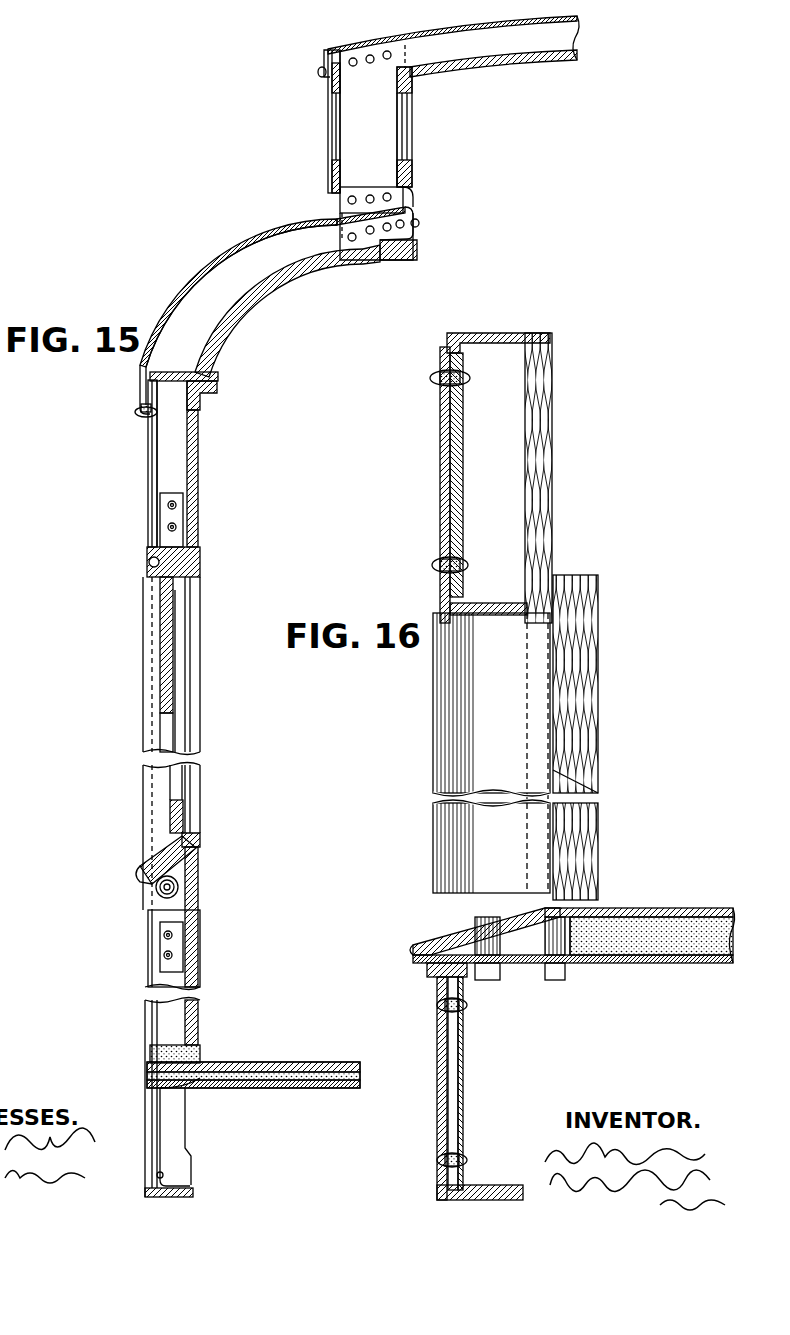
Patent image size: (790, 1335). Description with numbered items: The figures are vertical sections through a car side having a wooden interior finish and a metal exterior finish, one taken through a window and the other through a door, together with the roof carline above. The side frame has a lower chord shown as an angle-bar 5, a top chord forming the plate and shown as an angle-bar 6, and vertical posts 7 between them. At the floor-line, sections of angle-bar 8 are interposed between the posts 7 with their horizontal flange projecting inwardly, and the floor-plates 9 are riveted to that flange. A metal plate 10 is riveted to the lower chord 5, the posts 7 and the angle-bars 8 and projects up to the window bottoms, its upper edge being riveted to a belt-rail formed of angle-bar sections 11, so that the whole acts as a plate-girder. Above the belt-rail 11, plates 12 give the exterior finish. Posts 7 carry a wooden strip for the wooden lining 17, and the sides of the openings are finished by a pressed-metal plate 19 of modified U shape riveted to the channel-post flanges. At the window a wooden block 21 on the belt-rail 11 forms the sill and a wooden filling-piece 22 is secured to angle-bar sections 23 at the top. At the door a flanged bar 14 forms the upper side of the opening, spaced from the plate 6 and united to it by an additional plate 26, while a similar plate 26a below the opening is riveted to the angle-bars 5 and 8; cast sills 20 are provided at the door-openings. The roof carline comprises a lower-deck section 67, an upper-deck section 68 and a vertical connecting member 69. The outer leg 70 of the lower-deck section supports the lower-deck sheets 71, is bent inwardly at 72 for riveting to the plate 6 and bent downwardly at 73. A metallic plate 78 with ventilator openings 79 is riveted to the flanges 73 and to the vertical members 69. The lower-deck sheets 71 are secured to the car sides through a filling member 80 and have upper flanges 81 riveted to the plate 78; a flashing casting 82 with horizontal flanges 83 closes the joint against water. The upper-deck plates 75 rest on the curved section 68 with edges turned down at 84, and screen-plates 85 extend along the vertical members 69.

In FIG. 15, the angle-bar (lower chord) 5 is at (195, 1195).
In FIG. 16, the angle-bar (lower chord) 5 is at (470, 1190).
In FIG. 15, the angle-bar (top chord or plate) 6 is at (157, 373).
In FIG. 16, the angle-bar (top chord or plate) 6 is at (466, 333).
In FIG. 15, the posts 7 is at (178, 435).
In FIG. 15, the angle-bar sections 8 is at (162, 1090).
In FIG. 16, the angle-bar sections 8 is at (470, 982).
In FIG. 15, the floor-plates 9 is at (290, 1082).
In FIG. 16, the floor-plates 9 is at (670, 964).
In FIG. 15, the metal plate 10 is at (152, 970).
In FIG. 16, the metal plate 10 is at (437, 1095).
In FIG. 15, the belt-rail (angle-bar sections) 11 is at (160, 907).
In FIG. 15, the plates 12 is at (150, 465).
In FIG. 16, the plates 12 is at (440, 461).
In FIG. 16, the flanged bar 14 is at (477, 603).
In FIG. 15, the wooden lining 17 is at (198, 475).
In FIG. 16, the wooden lining 17 is at (545, 525).
In FIG. 16, the pressed-metal plate 19 is at (450, 700).
In FIG. 16, the sills 20 is at (420, 943).
In FIG. 15, the wooden block 21 is at (180, 873).
In FIG. 15, the wooden filling-piece 22 is at (199, 560).
In FIG. 15, the angle-bar sections 23 is at (157, 547).
In FIG. 16, the additional plate 26 is at (463, 453).
In FIG. 16, the plate 26a is at (458, 1067).
In FIG. 15, the lower-deck section 67 is at (253, 263).
In FIG. 15, the upper-deck section 68 is at (523, 40).
In FIG. 15, the vertical connecting member 69 is at (360, 157).
In FIG. 15, the outer leg 70 is at (190, 298).
In FIG. 15, the lower-deck sheets 71 is at (220, 270).
In FIG. 15, the inward bend 72 is at (177, 371).
In FIG. 15, the downward bend (flange) 73 is at (377, 255).
In FIG. 15, the upper-deck plates 75 is at (364, 47).
In FIG. 15, the metallic plate (ventilator-plate) 78 is at (413, 212).
In FIG. 15, the openings 79 is at (412, 130).
In FIG. 15, the filling member 80 is at (143, 418).
In FIG. 15, the flanges 81 is at (412, 188).
In FIG. 15, the flashing casting 82 is at (360, 193).
In FIG. 15, the horizontal flanges 83 is at (313, 220).
In FIG. 15, the turned-down edges 84 is at (324, 62).
In FIG. 15, the screen-plates 85 is at (328, 117).